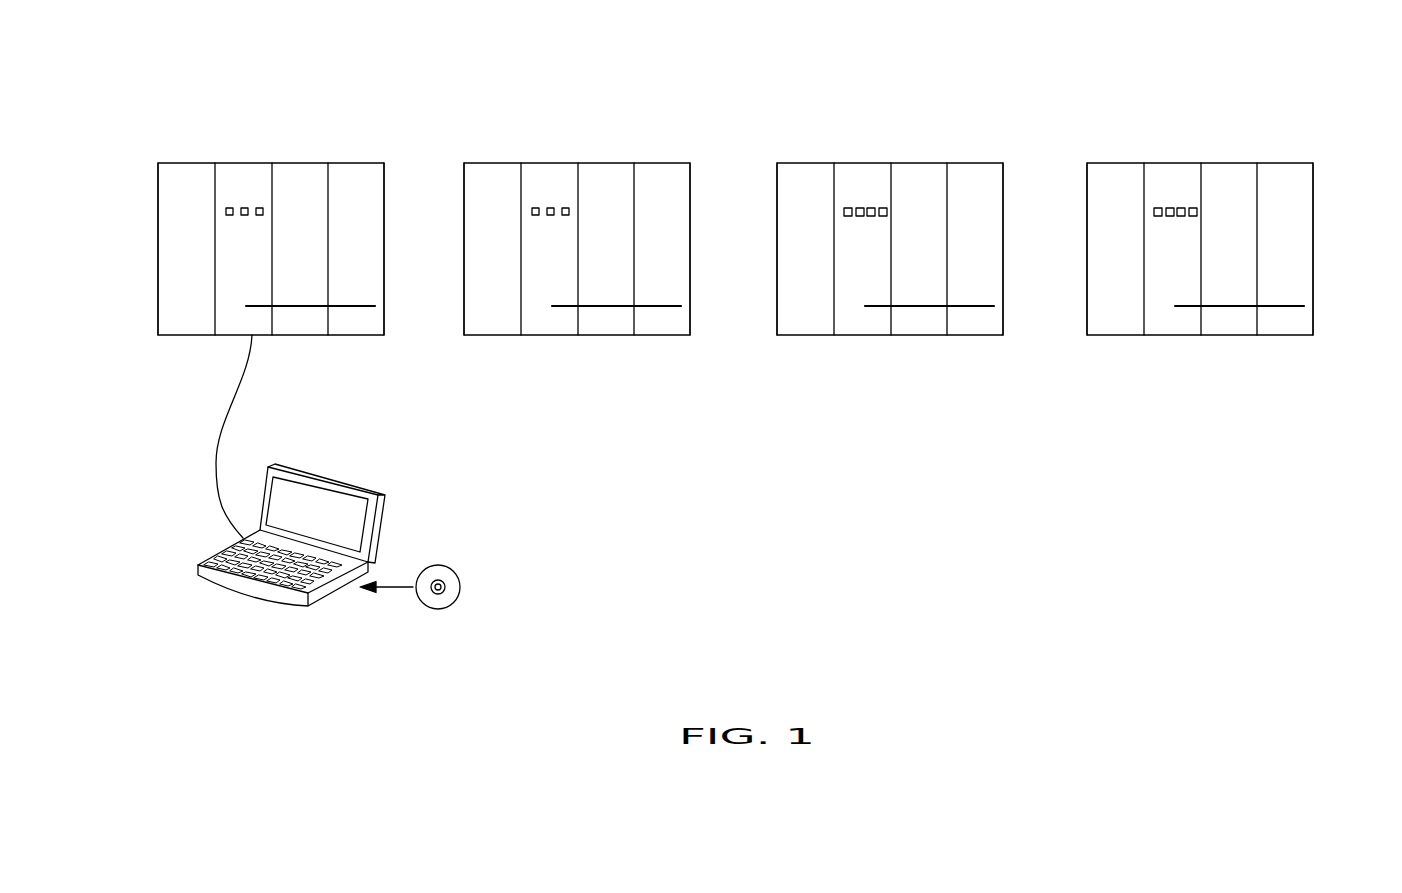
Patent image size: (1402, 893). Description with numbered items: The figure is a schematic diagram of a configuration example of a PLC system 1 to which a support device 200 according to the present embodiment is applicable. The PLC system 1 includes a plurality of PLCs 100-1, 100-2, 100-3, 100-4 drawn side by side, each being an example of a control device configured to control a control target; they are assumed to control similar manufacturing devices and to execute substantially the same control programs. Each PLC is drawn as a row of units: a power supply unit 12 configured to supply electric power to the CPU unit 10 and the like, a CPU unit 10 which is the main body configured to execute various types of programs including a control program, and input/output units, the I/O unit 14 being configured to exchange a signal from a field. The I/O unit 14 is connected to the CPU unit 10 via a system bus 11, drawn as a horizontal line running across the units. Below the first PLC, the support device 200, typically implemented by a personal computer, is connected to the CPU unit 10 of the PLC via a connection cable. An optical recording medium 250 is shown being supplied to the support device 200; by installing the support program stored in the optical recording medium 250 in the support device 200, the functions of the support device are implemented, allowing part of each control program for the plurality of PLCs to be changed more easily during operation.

The PLC system 1 is at (1329, 72).
The PLC 100-1 is at (392, 350).
The PLC 100-2 is at (698, 350).
The PLC 100-3 is at (1011, 350).
The PLC 100-4 is at (1321, 350).
The CPU unit 10 is at (228, 336).
The system bus 11 is at (362, 304).
The power supply unit 12 is at (178, 336).
The input/output (I/O) unit 14 is at (300, 162).
The support device 200 is at (380, 512).
The optical recording medium 250 is at (440, 609).